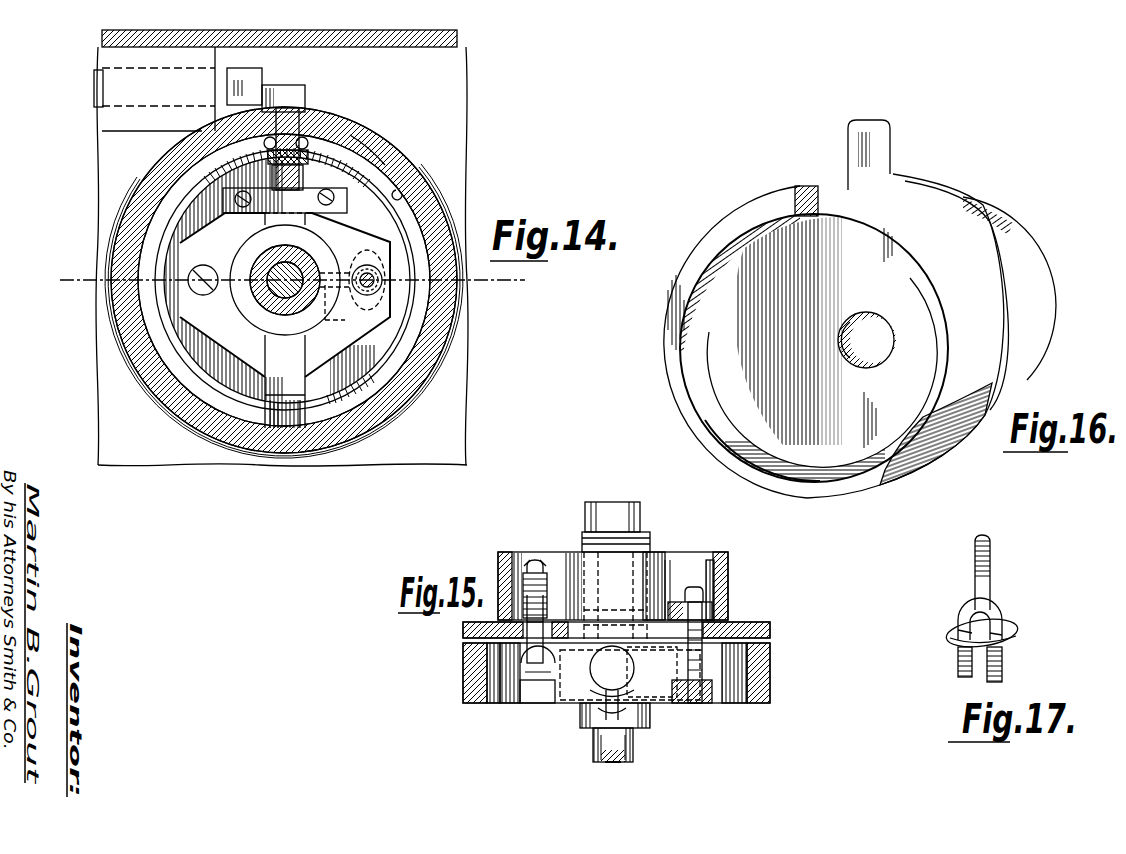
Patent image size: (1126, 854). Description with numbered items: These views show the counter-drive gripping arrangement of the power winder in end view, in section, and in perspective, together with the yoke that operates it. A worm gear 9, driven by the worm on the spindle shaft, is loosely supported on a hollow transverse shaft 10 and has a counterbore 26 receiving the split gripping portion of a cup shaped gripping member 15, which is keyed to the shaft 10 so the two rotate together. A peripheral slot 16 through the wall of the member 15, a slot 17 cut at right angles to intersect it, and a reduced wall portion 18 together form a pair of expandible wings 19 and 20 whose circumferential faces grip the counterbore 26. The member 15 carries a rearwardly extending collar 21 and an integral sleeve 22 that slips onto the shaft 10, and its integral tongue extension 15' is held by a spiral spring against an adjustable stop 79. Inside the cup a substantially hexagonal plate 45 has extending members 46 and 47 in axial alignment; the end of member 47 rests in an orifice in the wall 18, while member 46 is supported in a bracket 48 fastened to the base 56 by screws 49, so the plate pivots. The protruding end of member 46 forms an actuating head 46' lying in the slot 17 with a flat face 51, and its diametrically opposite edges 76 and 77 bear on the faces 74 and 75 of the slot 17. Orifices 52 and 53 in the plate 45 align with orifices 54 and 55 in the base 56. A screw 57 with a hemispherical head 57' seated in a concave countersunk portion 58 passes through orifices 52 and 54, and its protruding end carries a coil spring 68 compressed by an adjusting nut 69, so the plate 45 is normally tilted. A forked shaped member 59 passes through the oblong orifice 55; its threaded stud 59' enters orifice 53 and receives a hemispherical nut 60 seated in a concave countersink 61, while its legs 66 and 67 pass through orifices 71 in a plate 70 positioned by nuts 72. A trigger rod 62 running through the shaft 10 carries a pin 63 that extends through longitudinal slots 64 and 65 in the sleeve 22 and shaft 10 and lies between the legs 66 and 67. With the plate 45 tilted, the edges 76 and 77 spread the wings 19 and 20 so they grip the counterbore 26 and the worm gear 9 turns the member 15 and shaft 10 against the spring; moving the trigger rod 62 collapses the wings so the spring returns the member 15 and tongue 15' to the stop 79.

In FIG. 14, the worm gear 9 is at (322, 182).
In FIG. 14, the hollow transverse shaft 10 is at (243, 272).
In FIG. 15, the hollow transverse shaft 10 is at (592, 505).
In FIG. 14, the cup shaped gripping member 15 is at (292, 282).
In FIG. 16, the cup shaped gripping member 15 is at (788, 342).
In FIG. 15, the cup shaped gripping member 15 is at (772, 673).
In FIG. 14, the tongue extension 15' is at (295, 85).
In FIG. 16, the tongue extension 15' is at (888, 151).
In FIG. 16, the peripheral slot 16 is at (1033, 370).
In FIG. 15, the peripheral slot 16 is at (470, 648).
In FIG. 16, the slot 17 is at (806, 186).
In FIG. 15, the slot 17 is at (600, 722).
In FIG. 16, the reduced wall portion 18 is at (808, 494).
In FIG. 16, the expandible wing 19 is at (745, 215).
In FIG. 16, the expandible wing 20 is at (915, 455).
In FIG. 15, the collar 21 is at (505, 560).
In FIG. 15, the sleeve 22 is at (585, 540).
In FIG. 14, the counterbore 26 is at (413, 183).
In FIG. 14, the hexagonal shaped plate 45 is at (237, 343).
In FIG. 14, the extending member 46 is at (297, 166).
In FIG. 14, the actuating head 46' is at (310, 119).
In FIG. 15, the actuating head 46' is at (620, 780).
In FIG. 14, the extending member 47 is at (283, 395).
In FIG. 14, the bracket 48 is at (370, 152).
In FIG. 14, the screws 49 is at (334, 197).
In FIG. 15, the flat face 51 is at (645, 718).
In FIG. 15, the orifice 52 is at (518, 695).
In FIG. 15, the orifice 53 is at (702, 688).
In FIG. 15, the orifice 54 is at (528, 650).
In FIG. 14, the oblong orifice 55 is at (363, 254).
In FIG. 15, the oblong orifice 55 is at (735, 626).
In FIG. 15, the base 56 is at (480, 625).
In FIG. 15, the screw 57 is at (492, 663).
In FIG. 14, the hemispherical head 57' is at (199, 309).
In FIG. 15, the hemispherical head 57' is at (514, 663).
In FIG. 15, the concave countersunk portion 58 is at (590, 680).
In FIG. 14, the forked shaped member 59 is at (353, 299).
In FIG. 15, the forked shaped member 59 is at (680, 673).
In FIG. 17, the forked shaped member 59 is at (1001, 611).
In FIG. 17, the threaded stud 59' is at (1004, 572).
In FIG. 14, the hemispherical shaped nut 60 is at (366, 302).
In FIG. 15, the hemispherical shaped nut 60 is at (708, 703).
In FIG. 15, the concave countersink 61 is at (712, 703).
In FIG. 14, the trigger rod 62 is at (277, 265).
In FIG. 15, the trigger rod 62 is at (633, 750).
In FIG. 14, the pin 63 is at (328, 337).
In FIG. 15, the pin 63 is at (693, 586).
In FIG. 15, the longitudinal slot 64 is at (665, 556).
In FIG. 15, the longitudinal slot 65 is at (655, 552).
In FIG. 17, the leg 66 is at (963, 677).
In FIG. 17, the leg 67 is at (1002, 680).
In FIG. 15, the coil spring 68 is at (555, 575).
In FIG. 15, the adjusting nut 69 is at (530, 562).
In FIG. 15, the plate 70 is at (715, 600).
In FIG. 17, the plate 70 is at (1012, 640).
In FIG. 17, the orifices 71 is at (955, 640).
In FIG. 15, the nuts 72 is at (722, 580).
In FIG. 17, the nuts 72 is at (958, 650).
In FIG. 15, the face 74 is at (595, 690).
In FIG. 15, the face 75 is at (668, 662).
In FIG. 15, the edge 76 is at (600, 705).
In FIG. 15, the edge 77 is at (612, 612).
In FIG. 14, the adjustable stop 79 is at (255, 78).